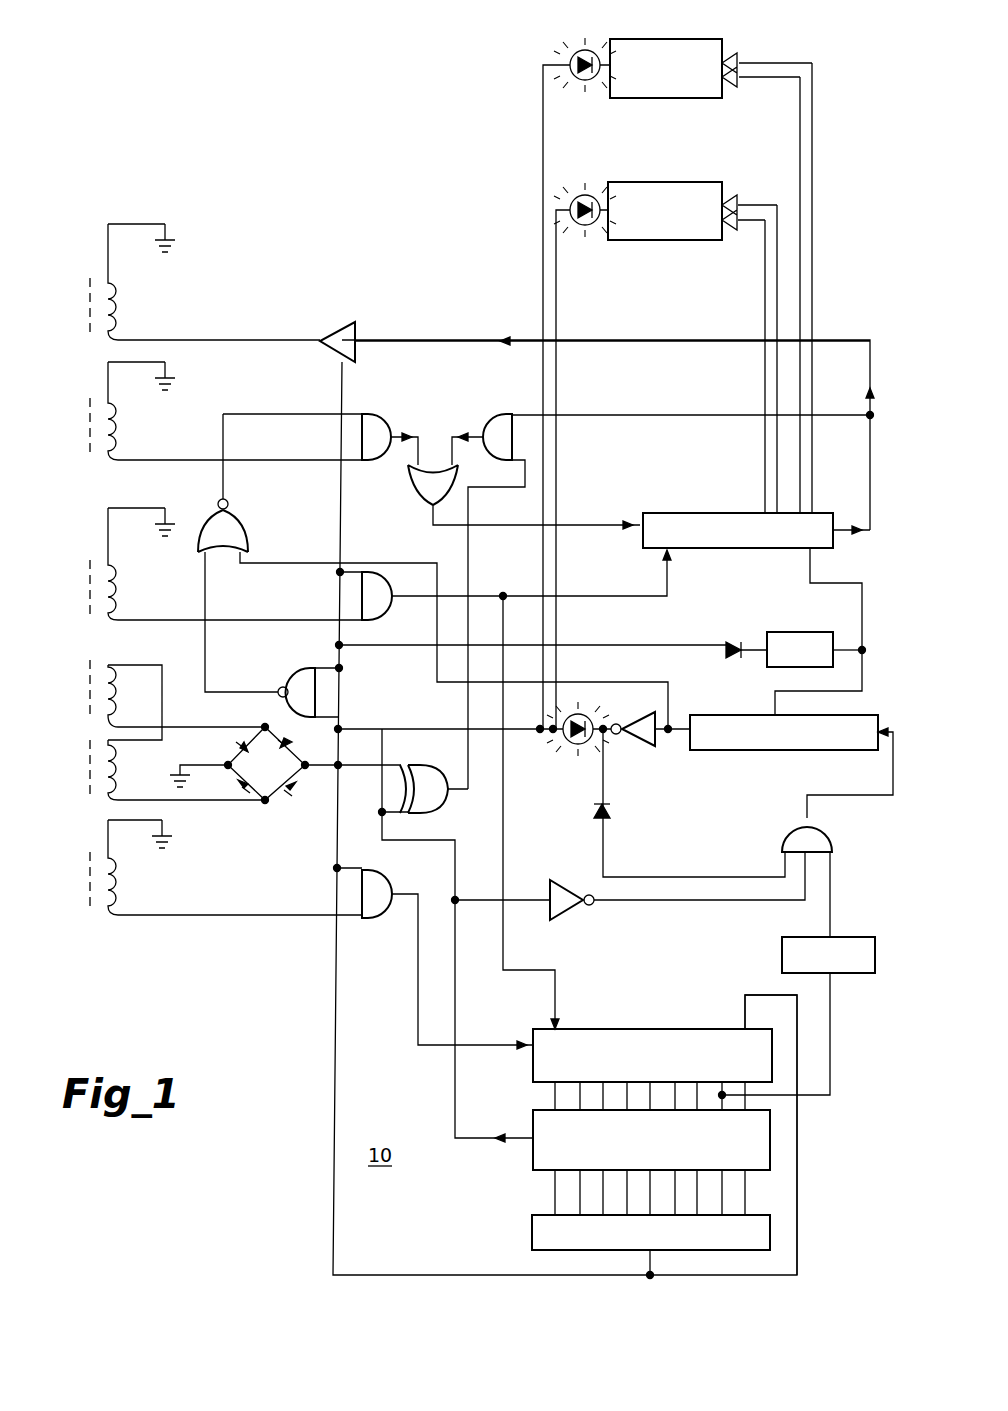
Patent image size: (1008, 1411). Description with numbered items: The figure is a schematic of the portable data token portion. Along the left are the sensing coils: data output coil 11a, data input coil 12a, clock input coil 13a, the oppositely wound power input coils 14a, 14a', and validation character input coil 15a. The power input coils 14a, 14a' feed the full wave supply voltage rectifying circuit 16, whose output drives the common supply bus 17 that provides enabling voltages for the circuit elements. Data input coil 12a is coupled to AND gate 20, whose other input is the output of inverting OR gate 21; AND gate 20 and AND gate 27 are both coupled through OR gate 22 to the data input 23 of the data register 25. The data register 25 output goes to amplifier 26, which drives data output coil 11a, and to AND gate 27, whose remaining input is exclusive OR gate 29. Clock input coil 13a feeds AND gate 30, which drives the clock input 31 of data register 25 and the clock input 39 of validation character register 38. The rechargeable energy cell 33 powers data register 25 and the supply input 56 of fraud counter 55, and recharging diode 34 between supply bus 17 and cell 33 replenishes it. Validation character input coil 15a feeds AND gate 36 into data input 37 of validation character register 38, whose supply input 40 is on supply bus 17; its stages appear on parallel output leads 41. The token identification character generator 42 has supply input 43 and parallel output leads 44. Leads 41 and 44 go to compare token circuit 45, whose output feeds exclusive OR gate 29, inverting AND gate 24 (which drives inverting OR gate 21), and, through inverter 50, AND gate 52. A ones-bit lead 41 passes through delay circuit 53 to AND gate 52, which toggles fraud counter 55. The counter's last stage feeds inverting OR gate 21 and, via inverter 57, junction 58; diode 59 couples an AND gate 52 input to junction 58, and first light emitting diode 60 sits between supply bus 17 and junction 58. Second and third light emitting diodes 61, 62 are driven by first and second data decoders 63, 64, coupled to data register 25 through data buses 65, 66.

The data output coil 11a is at (118, 312).
The data input coil 12a is at (118, 438).
The clock input coil 13a is at (118, 596).
The power input coil 14a is at (177, 700).
The power input coil 14a' is at (177, 770).
The validation character input coil 15a is at (118, 903).
The full wave supply voltage rectifying circuit 16 is at (280, 805).
The common supply bus 17 is at (338, 825).
The AND gate 20 is at (380, 413).
The inverting OR gate 21 is at (233, 530).
The OR gate 22 is at (426, 485).
The data input 23 is at (632, 522).
The inverting AND gate 24 is at (302, 668).
The data register 25 is at (706, 513).
The amplifier 26 is at (346, 323).
The AND gate 27 is at (500, 413).
The exclusive OR gate 29 is at (410, 764).
The AND gate 30 is at (388, 614).
The clock input 31 is at (667, 572).
The rechargeable energy cell 33 is at (806, 632).
The recharging diode 34 is at (733, 640).
The AND gate 36 is at (376, 920).
The data input 37 is at (525, 1040).
The validation character register 38 is at (680, 1029).
The clock input 39 is at (557, 1020).
The supply input 40 is at (745, 1000).
The parallel output leads 41 is at (603, 1088).
The token identification character generator 42 is at (532, 1230).
The supply input 43 is at (650, 1262).
The parallel output leads 44 is at (603, 1200).
The compare token circuit 45 is at (775, 1145).
The inverter 50 is at (568, 880).
The AND gate 52 is at (790, 822).
The delay circuit 53 is at (845, 937).
The fraud counter 55 is at (870, 716).
The supply input 56 is at (775, 700).
The inverter 57 is at (630, 748).
The junction 58 is at (636, 712).
The diode 59 is at (612, 812).
The first light emitting diode 60 is at (590, 716).
The second light emitting diode 61 is at (590, 196).
The third light emitting diode 62 is at (580, 50).
The first data decoder 63 is at (702, 182).
The second data decoder 64 is at (655, 100).
The data bus 65 is at (765, 280).
The data bus 66 is at (812, 242).